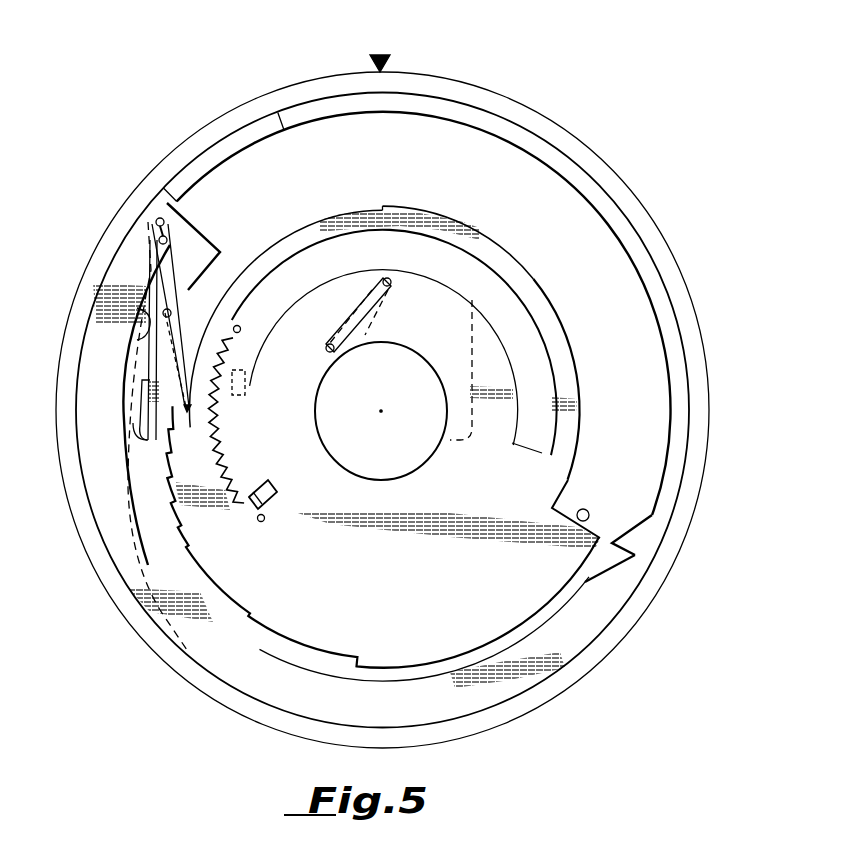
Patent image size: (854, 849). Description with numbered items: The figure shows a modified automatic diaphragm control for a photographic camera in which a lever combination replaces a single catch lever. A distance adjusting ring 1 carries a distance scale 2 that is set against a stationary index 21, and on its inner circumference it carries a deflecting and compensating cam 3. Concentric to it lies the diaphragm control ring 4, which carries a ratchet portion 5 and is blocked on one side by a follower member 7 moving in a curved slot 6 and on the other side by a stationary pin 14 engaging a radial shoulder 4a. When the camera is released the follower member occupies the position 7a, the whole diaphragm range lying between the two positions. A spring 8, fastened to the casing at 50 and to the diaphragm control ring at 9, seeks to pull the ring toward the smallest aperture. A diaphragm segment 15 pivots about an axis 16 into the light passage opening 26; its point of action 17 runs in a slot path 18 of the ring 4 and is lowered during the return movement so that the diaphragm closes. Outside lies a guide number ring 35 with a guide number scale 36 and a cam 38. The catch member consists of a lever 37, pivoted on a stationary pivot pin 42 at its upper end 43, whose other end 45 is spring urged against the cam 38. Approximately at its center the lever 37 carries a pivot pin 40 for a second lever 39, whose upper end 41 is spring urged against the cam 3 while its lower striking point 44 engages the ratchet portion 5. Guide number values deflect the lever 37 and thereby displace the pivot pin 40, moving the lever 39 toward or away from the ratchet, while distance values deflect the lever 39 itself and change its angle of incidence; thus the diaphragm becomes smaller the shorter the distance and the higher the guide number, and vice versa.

The distance adjusting ring 1 is at (215, 656).
The distance scale 2 is at (307, 107).
The deflecting and compensating cam 3 is at (140, 332).
The diaphragm control ring 4 is at (279, 620).
The radial shoulder 4a is at (578, 508).
The ratchet portion 5 is at (177, 492).
The curved slot 6 is at (490, 272).
The follower member 7 is at (267, 488).
The position of follower member 7a is at (246, 385).
The spring 8 is at (236, 422).
The spring attachment point on diaphragm control ring 9 is at (261, 522).
The stationary pin 14 is at (589, 514).
The diaphragm segment 15 is at (470, 348).
The axis of diaphragm segment 16 is at (368, 340).
The point of action 17 is at (389, 279).
The slot path 18 is at (333, 340).
The stationary index 21 is at (386, 53).
The light passage opening 26 is at (403, 438).
The guide number ring 35 is at (470, 94).
The guide number scale 36 is at (268, 97).
The lever 37 is at (155, 373).
The cam of guide number ring 38 is at (170, 264).
The second lever 39 is at (165, 257).
The pivot pin 40 is at (171, 313).
The upper end of second lever 41 is at (167, 239).
The stationary pivot pin 42 is at (164, 221).
The upper end of lever 43 is at (148, 222).
The lower striking point 44 is at (187, 412).
The other end of lever 45 is at (140, 535).
The spring attachment point on casing 50 is at (241, 327).